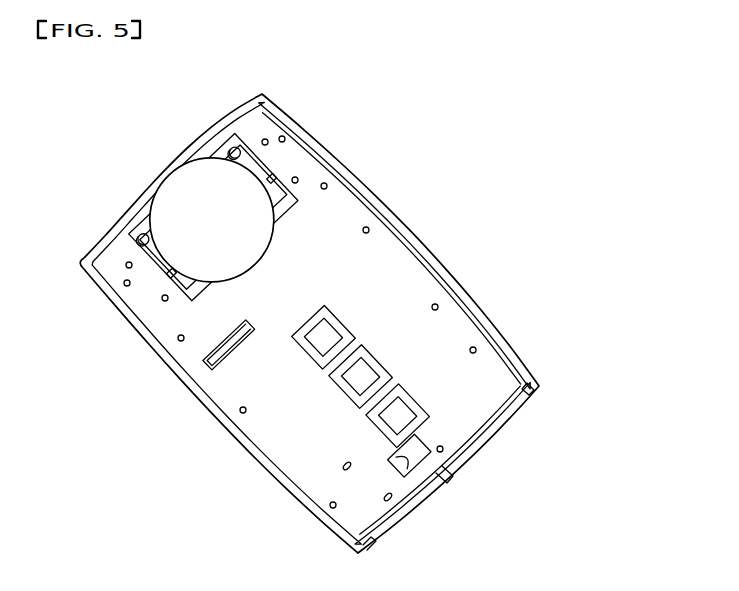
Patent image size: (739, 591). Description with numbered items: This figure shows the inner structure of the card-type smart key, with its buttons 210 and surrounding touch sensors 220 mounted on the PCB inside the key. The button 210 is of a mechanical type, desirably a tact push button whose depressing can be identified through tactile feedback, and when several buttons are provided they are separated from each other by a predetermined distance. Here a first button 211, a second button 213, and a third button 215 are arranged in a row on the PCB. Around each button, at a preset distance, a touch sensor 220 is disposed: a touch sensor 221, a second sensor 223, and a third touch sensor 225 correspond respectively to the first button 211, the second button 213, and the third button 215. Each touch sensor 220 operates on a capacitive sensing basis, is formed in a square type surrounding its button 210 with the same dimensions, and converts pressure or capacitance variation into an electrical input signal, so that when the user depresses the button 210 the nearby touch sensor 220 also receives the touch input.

The button 210 is at (633, 272).
The first button 211 is at (503, 401).
The second button 213 is at (484, 360).
The third button 215 is at (465, 315).
The touch sensor 220 is at (115, 423).
The touch sensor 221 is at (275, 463).
The second sensor 223 is at (257, 421).
The third touch sensor 225 is at (238, 376).